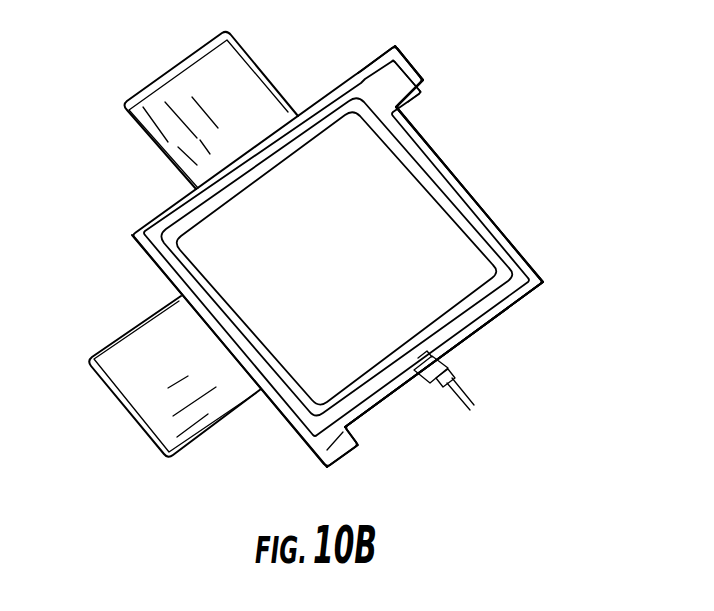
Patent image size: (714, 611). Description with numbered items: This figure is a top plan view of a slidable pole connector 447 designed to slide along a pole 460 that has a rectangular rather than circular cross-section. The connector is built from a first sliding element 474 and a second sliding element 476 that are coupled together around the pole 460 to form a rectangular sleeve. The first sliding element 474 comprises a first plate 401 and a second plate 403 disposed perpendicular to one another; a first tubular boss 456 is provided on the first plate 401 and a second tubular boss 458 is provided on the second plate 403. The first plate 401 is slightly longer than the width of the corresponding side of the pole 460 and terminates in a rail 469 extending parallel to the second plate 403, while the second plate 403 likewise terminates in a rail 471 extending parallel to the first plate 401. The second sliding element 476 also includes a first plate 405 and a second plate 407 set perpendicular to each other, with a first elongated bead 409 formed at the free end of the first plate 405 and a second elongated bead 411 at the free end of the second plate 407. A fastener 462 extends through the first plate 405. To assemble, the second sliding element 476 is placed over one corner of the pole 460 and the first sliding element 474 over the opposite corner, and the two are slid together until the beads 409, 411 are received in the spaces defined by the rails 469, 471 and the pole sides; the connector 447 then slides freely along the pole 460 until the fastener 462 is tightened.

The first plate 401 is at (295, 428).
The second plate 403 is at (343, 82).
The first plate 405 is at (483, 328).
The second plate 407 is at (425, 139).
The first elongated bead 409 is at (345, 428).
The second elongated bead 411 is at (405, 100).
The slidable pole connector 447 is at (498, 165).
The first tubular boss 456 is at (135, 396).
The second tubular boss 458 is at (202, 60).
The pole 460 is at (490, 250).
The fastener 462 is at (460, 416).
The rail 469 is at (346, 454).
The rail 471 is at (410, 63).
The first sliding element 474 is at (152, 274).
The second sliding element 476 is at (520, 303).